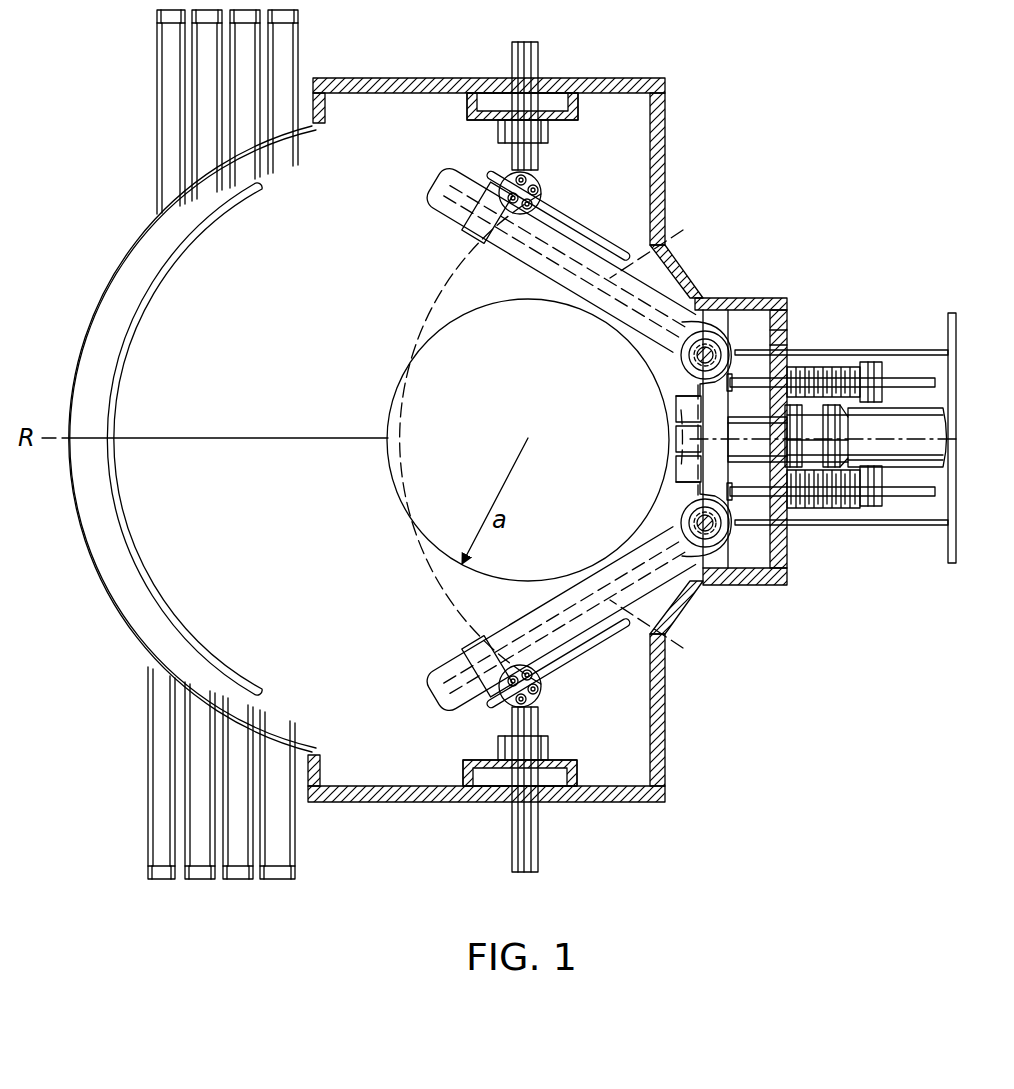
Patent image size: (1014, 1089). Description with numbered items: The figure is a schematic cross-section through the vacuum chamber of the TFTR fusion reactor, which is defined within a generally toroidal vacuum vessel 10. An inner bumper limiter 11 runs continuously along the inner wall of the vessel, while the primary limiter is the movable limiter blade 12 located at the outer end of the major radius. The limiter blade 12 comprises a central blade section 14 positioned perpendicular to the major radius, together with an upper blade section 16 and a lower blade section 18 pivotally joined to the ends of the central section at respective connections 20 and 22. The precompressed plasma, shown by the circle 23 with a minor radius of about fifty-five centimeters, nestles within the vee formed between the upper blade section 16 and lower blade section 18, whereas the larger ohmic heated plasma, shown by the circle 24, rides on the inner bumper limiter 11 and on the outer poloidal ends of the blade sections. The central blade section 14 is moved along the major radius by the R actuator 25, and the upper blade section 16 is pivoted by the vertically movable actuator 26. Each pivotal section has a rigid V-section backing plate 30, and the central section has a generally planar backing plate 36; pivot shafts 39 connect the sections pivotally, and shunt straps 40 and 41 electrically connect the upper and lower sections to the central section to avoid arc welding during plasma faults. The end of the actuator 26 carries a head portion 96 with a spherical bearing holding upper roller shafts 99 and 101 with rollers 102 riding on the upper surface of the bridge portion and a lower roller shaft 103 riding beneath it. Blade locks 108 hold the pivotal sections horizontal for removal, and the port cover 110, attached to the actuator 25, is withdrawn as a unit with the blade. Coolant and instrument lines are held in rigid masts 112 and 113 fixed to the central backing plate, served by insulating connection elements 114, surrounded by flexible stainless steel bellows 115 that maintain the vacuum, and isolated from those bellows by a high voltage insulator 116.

The vacuum vessel 10 is at (104, 262).
The inner bumper limiter 11 is at (108, 388).
The movable limiter blade 12 is at (648, 279).
The central blade section 14 is at (720, 443).
The upper blade section 16 is at (443, 200).
The lower blade section 18 is at (438, 676).
The connection 20 is at (740, 291).
The connection 22 is at (706, 583).
The circle 23 is at (386, 392).
The circle 24 is at (230, 664).
The R actuator 25 is at (920, 443).
The actuator 26 is at (534, 66).
The backing plate 30 is at (663, 439).
The backing plate 36 is at (676, 447).
The pivot shaft 39 is at (756, 372).
The shunt strap 40 is at (673, 392).
The shunt strap 41 is at (680, 490).
The head portion 96 is at (536, 181).
The upper roller shaft 99 is at (542, 194).
The upper roller shaft 101 is at (512, 175).
The roller 102 is at (527, 206).
The lower roller shaft 103 is at (490, 218).
The blade lock 108 is at (826, 366).
The port cover 110 is at (782, 360).
The mast 112 is at (736, 352).
The mast 113 is at (758, 497).
The connection element 114 is at (927, 378).
The bellows 115 is at (812, 373).
The high voltage insulator 116 is at (870, 362).